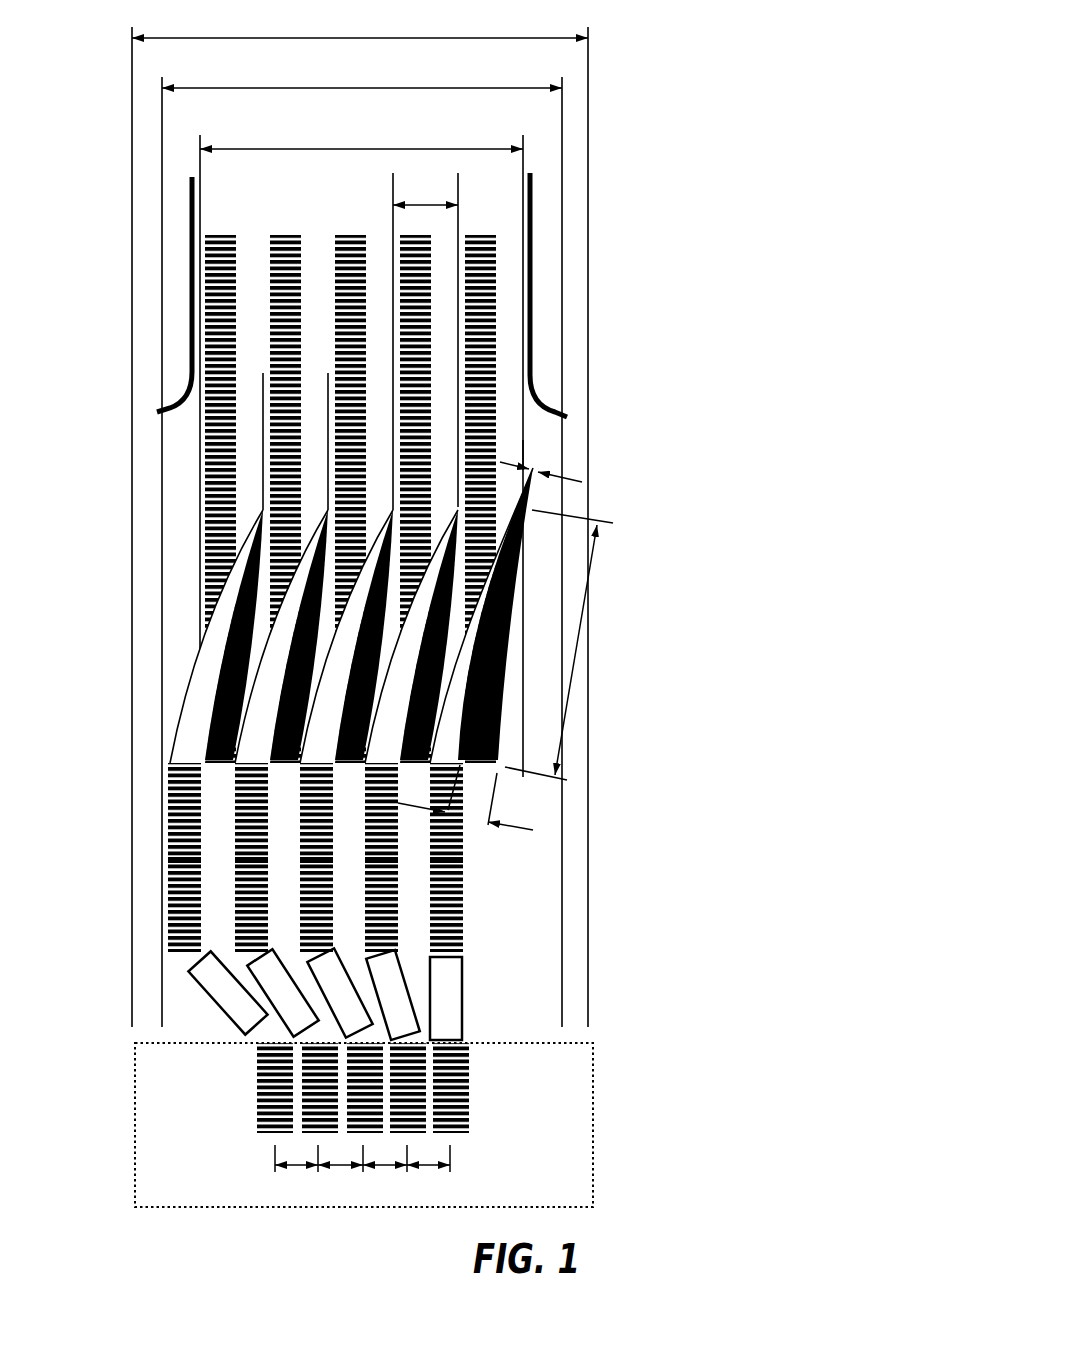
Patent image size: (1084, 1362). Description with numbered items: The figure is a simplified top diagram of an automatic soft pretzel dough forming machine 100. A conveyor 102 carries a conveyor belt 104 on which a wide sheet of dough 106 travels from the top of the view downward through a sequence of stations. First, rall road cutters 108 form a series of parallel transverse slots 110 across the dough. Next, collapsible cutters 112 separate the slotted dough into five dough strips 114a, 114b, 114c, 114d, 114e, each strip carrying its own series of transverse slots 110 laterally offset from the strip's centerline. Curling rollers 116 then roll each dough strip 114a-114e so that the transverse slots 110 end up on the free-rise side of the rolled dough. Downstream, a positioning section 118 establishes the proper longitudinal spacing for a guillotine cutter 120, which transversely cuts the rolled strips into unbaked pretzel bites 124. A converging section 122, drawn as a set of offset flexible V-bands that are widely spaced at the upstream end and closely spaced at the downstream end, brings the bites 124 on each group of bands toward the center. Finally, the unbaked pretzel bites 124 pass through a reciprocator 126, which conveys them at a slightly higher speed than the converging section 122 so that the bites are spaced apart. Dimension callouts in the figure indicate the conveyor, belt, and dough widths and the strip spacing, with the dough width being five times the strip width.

The automatic soft pretzel dough forming machine 100 is at (610, 62).
The conveyor 102 is at (588, 210).
The conveyor belt 104 is at (560, 182).
The dough 106 is at (508, 237).
The rall road cutters 108 is at (502, 477).
The transverse slots 110 is at (272, 238).
The collapsible cutters 112 is at (484, 396).
The dough strip 114a is at (247, 433).
The dough strip 114b is at (313, 437).
The dough strip 114c is at (377, 427).
The dough strip 114d is at (365, 478).
The dough strip 114e is at (503, 437).
The curling rollers 116 is at (637, 508).
The positioning section 118 is at (750, 851).
The guillotine cutter 120 is at (637, 859).
The converging section 122 is at (637, 956).
The unbaked pretzel bites 124 is at (257, 1092).
The reciprocator 126 is at (637, 1049).